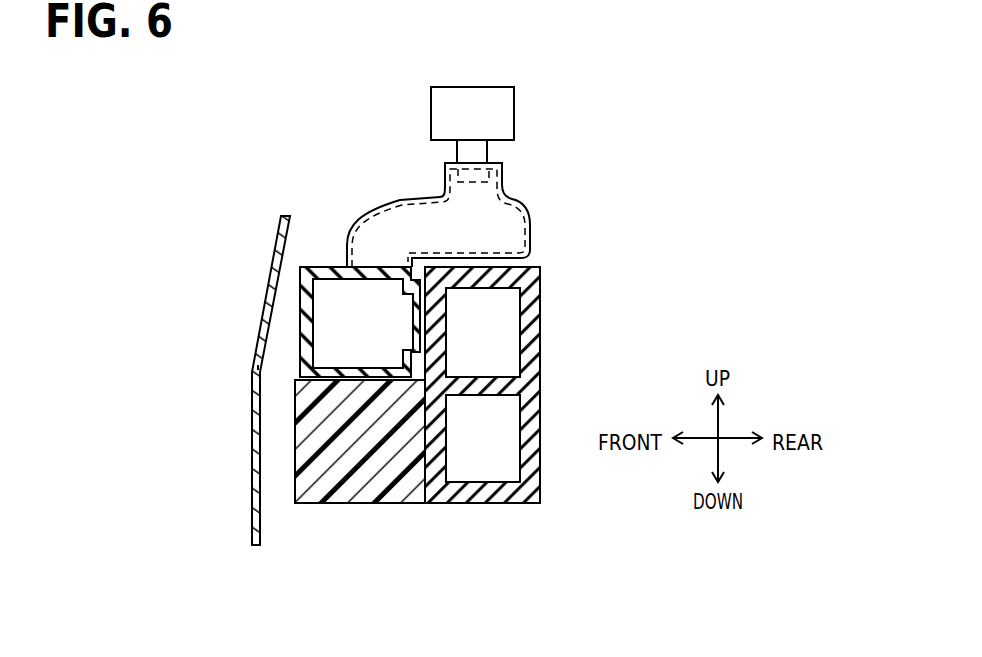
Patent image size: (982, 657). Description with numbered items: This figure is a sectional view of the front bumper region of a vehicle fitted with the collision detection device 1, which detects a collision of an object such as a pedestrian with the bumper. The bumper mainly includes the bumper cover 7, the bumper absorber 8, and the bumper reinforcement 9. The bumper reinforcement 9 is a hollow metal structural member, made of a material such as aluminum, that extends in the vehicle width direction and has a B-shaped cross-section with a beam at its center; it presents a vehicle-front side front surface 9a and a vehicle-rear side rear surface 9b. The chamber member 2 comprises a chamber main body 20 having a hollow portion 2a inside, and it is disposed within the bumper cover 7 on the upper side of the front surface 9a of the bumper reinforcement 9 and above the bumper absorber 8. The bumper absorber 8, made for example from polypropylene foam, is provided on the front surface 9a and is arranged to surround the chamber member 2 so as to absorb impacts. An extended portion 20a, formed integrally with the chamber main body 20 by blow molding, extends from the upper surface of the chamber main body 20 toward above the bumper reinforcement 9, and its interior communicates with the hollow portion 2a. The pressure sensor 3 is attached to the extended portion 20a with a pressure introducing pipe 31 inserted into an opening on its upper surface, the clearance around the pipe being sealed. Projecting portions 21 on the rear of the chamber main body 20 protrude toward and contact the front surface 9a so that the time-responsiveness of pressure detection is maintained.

The collision detection device 1 is at (665, 88).
The chamber member 2 is at (225, 245).
The hollow portion 2a is at (327, 355).
The pressure sensor 3 is at (515, 117).
The pressure introducing pipe 31 is at (487, 152).
The bumper cover 7 is at (253, 405).
The bumper absorber 8 is at (345, 503).
The bumper reinforcement 9 is at (470, 503).
The front surface 9a is at (400, 503).
The rear surface 9b is at (541, 473).
The chamber main body 20 is at (330, 267).
The extended portion 20a is at (532, 230).
The projecting portion 21 is at (415, 318).